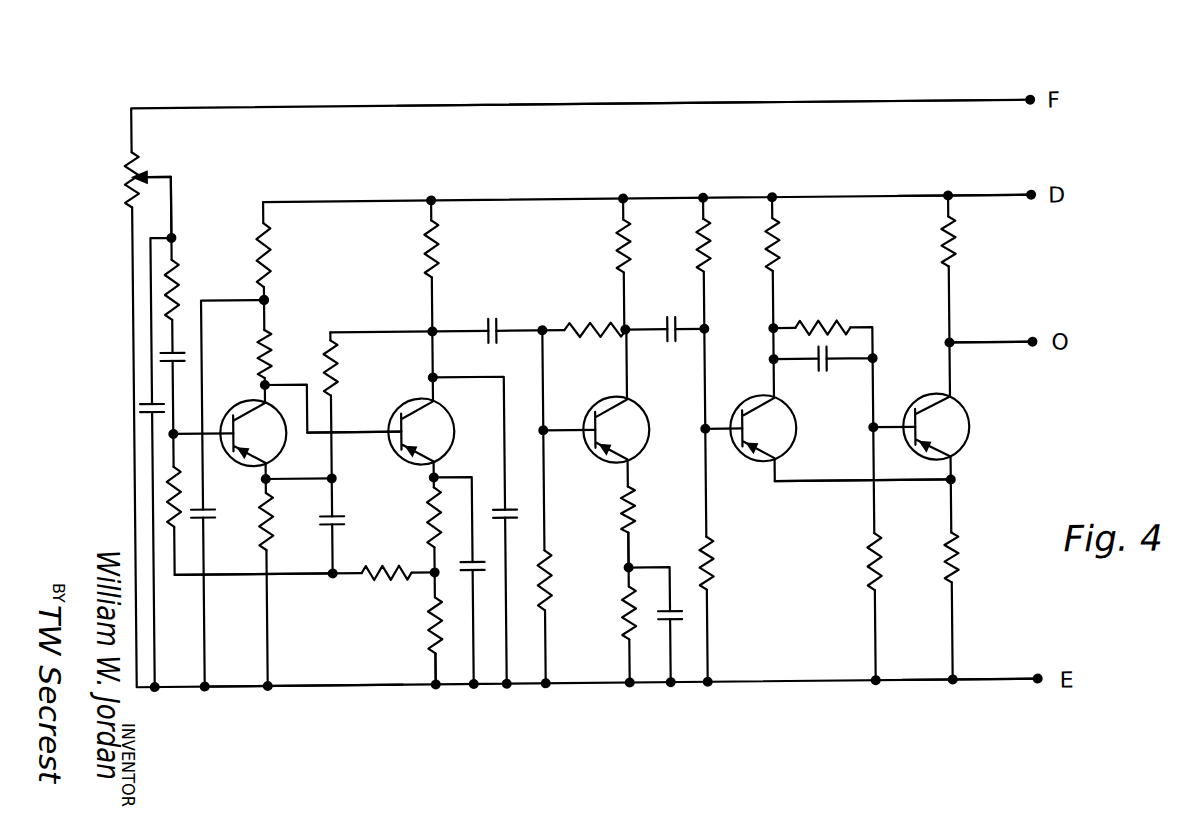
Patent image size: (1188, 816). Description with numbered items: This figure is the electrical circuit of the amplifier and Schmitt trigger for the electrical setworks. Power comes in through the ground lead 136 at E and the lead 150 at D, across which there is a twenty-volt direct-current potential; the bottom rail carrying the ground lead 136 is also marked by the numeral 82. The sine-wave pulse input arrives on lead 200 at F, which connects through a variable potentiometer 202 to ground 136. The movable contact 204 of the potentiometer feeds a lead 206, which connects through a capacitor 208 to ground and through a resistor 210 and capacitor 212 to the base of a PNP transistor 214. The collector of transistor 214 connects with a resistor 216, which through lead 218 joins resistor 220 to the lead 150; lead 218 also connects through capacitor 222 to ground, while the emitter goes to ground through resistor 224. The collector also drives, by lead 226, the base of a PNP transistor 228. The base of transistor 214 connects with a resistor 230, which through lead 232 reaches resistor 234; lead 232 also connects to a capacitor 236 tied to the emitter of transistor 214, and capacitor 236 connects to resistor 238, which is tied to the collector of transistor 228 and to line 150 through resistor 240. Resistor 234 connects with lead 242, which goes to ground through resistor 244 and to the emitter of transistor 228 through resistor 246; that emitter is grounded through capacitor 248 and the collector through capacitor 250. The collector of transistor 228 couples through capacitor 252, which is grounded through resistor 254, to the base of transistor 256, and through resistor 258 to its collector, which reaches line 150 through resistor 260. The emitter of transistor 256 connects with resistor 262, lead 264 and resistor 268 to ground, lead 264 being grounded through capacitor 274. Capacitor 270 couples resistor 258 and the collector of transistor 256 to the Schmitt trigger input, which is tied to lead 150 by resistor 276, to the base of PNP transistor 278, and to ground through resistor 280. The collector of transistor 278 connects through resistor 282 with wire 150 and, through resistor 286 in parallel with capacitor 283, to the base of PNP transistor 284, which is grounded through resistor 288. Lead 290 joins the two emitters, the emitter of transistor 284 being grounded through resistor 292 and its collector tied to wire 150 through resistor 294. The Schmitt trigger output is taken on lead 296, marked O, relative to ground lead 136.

The ground conductor 82 is at (300, 686).
The ground lead 136 is at (978, 683).
The lead 150 is at (958, 199).
The lead 200 is at (822, 104).
The variable potentiometer 202 is at (126, 173).
The movable contact 204 is at (152, 170).
The lead 206 is at (174, 206).
The capacitor 208 is at (142, 410).
The resistor 210 is at (179, 272).
The capacitor 212 is at (160, 352).
The PNP transistor 214 is at (244, 402).
The resistor 216 is at (272, 344).
The lead 218 is at (271, 301).
The resistor 220 is at (272, 250).
The capacitor 222 is at (206, 518).
The resistor 224 is at (272, 516).
The lead 226 is at (372, 428).
The PNP transistor 228 is at (419, 398).
The resistor 230 is at (166, 492).
The lead 232 is at (300, 574).
The resistor 234 is at (381, 576).
The capacitor 236 is at (342, 522).
The resistor 238 is at (338, 373).
The resistor 240 is at (439, 248).
The lead 242 is at (430, 598).
The resistor 244 is at (430, 644).
The resistor 246 is at (428, 531).
The capacitor 248 is at (476, 563).
The capacitor 250 is at (519, 514).
The capacitor 252 is at (491, 326).
The resistor 254 is at (549, 576).
The transistor 256 is at (640, 416).
The resistor 258 is at (588, 326).
The resistor 260 is at (631, 248).
The resistor 262 is at (634, 517).
The lead 264 is at (629, 560).
The resistor 268 is at (625, 627).
The capacitor 270 is at (668, 322).
The capacitor 274 is at (682, 616).
The resistor 276 is at (711, 242).
The PNP transistor 278 is at (748, 409).
The resistor 280 is at (711, 556).
The resistor 282 is at (780, 258).
The capacitor 283 is at (821, 368).
The PNP transistor 284 is at (932, 399).
The resistor 286 is at (835, 326).
The resistor 288 is at (879, 573).
The lead 290 is at (855, 483).
The resistor 292 is at (957, 549).
The resistor 294 is at (956, 249).
The lead 296 is at (985, 346).